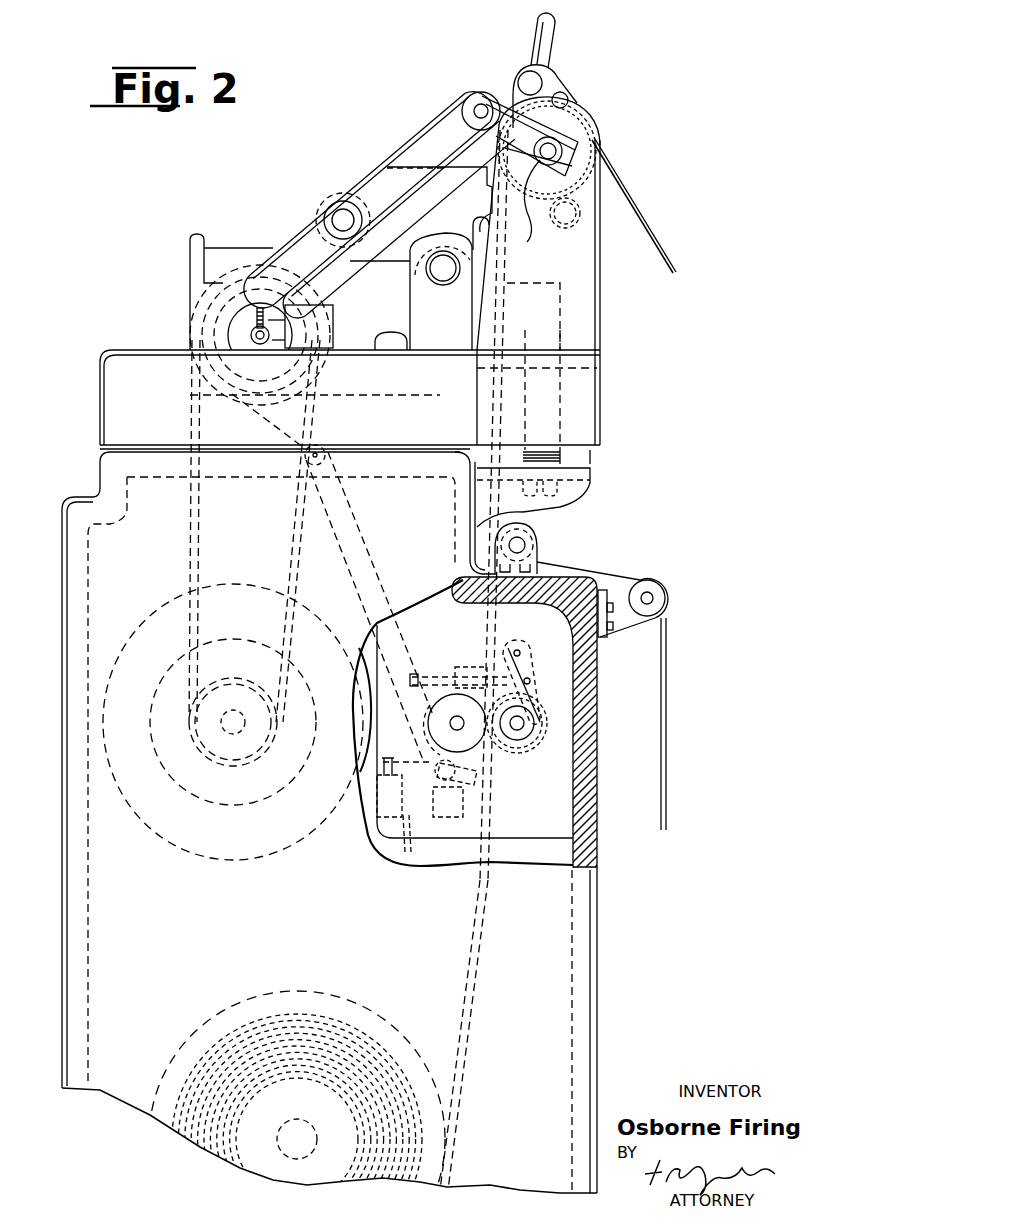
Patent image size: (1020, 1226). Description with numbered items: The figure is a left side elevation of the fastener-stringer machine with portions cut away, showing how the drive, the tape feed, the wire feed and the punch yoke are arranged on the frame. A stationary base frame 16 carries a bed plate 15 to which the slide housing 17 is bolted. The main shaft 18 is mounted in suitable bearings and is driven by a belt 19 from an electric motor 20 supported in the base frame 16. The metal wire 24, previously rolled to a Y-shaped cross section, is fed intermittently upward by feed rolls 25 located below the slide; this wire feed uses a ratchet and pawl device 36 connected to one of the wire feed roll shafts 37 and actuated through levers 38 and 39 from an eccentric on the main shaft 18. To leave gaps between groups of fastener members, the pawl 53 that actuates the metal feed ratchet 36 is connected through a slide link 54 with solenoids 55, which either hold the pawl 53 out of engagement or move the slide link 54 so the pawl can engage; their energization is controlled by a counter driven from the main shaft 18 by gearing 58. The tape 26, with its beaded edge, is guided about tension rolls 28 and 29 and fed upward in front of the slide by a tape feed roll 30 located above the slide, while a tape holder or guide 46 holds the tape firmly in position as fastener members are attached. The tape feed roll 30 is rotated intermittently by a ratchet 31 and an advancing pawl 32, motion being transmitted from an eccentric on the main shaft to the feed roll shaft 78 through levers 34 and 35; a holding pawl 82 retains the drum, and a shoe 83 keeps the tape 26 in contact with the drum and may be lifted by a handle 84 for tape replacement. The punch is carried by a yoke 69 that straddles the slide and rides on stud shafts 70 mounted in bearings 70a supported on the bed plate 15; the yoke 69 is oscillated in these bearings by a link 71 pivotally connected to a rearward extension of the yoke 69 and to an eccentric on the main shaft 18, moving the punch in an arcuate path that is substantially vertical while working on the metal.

The bed plate 15 is at (600, 403).
The base frame 16 is at (600, 858).
The slide housing 17 is at (459, 378).
The main shaft 18 is at (251, 335).
The belt 19 is at (207, 500).
The electric motor 20 is at (258, 860).
The metal wire 24 is at (478, 940).
The feed rolls 25 is at (487, 697).
The tape 26 is at (660, 246).
The tension roll 28 is at (668, 596).
The tension roll 29 is at (535, 537).
The tape feed roll 30 is at (603, 156).
The ratchet 31 is at (596, 126).
The pawl 32 is at (567, 98).
The lever 34 is at (393, 174).
The lever 35 is at (472, 92).
The ratchet and pawl device 36 is at (540, 735).
The wire feed roll shaft 37 is at (521, 723).
The lever 38 is at (500, 758).
The lever 39 is at (365, 538).
The tape holder or guide 46 is at (560, 316).
The pawl 53 is at (535, 663).
The slide link 54 is at (437, 650).
The solenoids 55 is at (406, 853).
The gearing 58 is at (258, 306).
The yoke 69 is at (463, 157).
The stud shafts 70 is at (436, 284).
The bearings 70a is at (390, 343).
The link 71 is at (295, 243).
The feed roll shaft 78 is at (537, 208).
The holding pawl 82 is at (580, 206).
The shoe 83 is at (505, 73).
The handle 84 is at (553, 40).